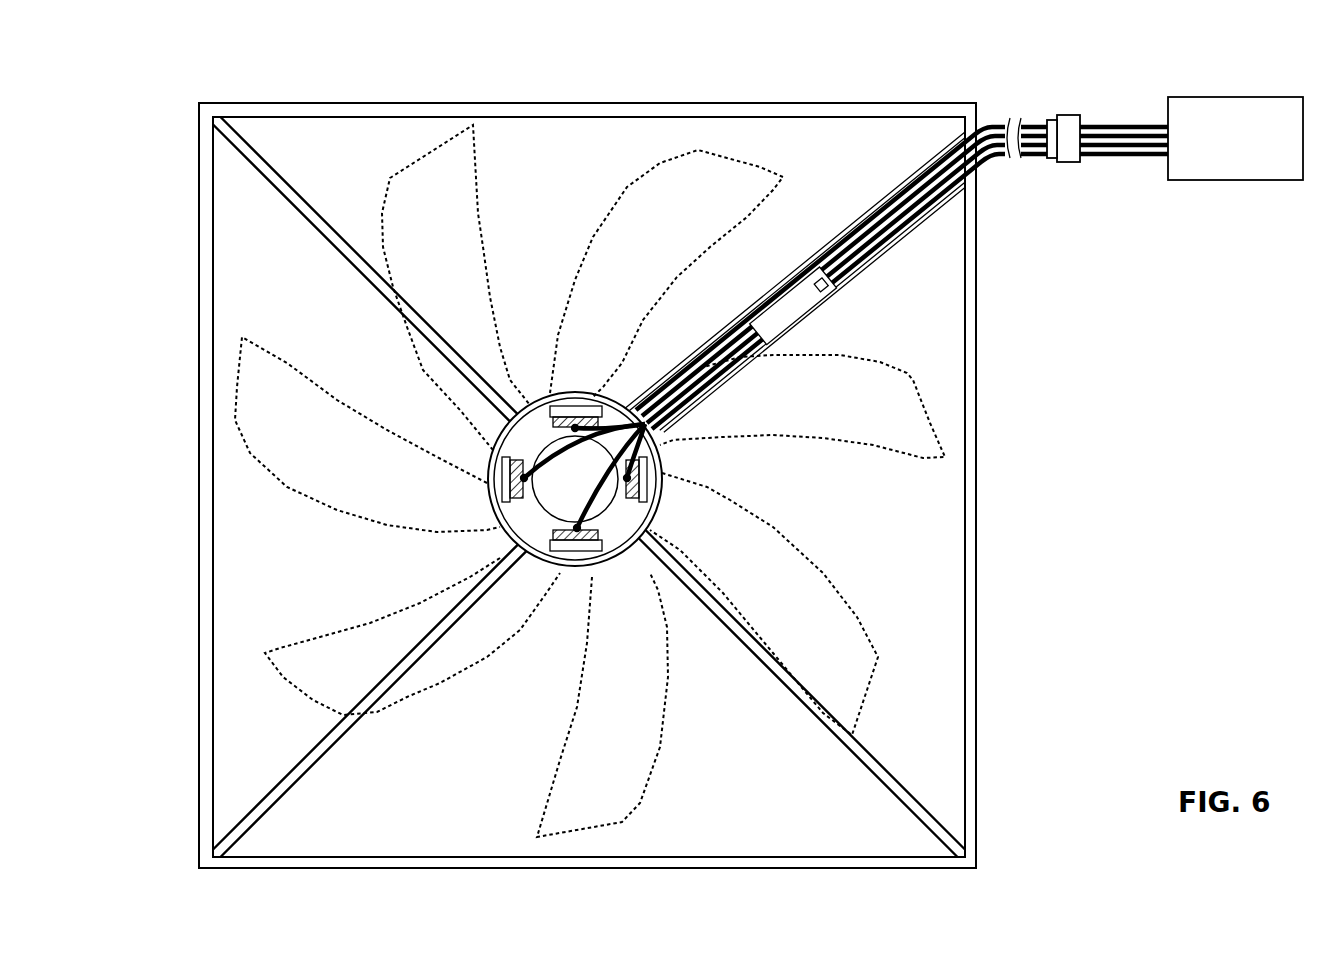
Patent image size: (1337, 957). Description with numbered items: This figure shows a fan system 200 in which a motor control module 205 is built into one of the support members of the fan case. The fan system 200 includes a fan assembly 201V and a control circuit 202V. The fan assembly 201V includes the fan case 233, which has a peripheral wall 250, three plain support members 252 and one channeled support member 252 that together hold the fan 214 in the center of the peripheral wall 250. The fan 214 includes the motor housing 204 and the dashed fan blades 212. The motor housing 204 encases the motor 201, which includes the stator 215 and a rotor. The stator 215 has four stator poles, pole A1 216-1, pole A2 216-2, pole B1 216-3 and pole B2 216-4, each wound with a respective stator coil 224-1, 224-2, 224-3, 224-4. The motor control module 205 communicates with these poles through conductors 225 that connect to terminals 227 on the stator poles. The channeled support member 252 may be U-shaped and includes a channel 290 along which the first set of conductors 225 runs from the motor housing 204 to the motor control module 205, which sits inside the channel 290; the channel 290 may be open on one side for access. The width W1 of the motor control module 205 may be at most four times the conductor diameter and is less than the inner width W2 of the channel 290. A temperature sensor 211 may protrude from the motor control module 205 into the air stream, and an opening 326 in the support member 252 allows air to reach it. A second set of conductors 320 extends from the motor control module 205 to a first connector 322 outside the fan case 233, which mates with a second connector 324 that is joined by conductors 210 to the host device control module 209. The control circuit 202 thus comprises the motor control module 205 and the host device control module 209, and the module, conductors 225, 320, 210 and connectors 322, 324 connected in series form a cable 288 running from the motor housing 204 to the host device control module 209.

The fan system 200 is at (316, 47).
The motor 201 is at (468, 457).
The fan assembly 201V is at (980, 315).
The control circuit 202 is at (622, 385).
The control circuit 202V is at (1168, 230).
The motor housing 204 is at (573, 568).
The motor control module 205 is at (796, 281).
The host device control module 209 is at (1236, 97).
The conductors 210 is at (1136, 124).
The temperature sensor 211 is at (829, 300).
The fan blades 212 is at (600, 237).
The fan 214 is at (783, 177).
The stator 215 is at (505, 542).
The pole A1 216-1 is at (552, 405).
The pole A2 216-2 is at (568, 560).
The pole B1 216-3 is at (500, 485).
The pole B2 216-4 is at (648, 460).
The stator coil 224-1 is at (512, 372).
The stator coil 224-2 is at (612, 560).
The stator coil 224-3 is at (514, 503).
The stator coil 224-4 is at (641, 526).
The conductors 225 is at (738, 378).
The terminals 227 is at (527, 479).
The fan case 233 is at (984, 517).
The peripheral wall 250 is at (963, 589).
The support member 252 is at (912, 226).
The cable 288 is at (995, 127).
The channel 290 is at (913, 175).
The conductors 320 is at (877, 284).
The first connector 322 is at (1048, 160).
The second connector 324 is at (1066, 115).
The opening 326 is at (742, 326).
The width of the motor control module W1 is at (776, 292).
The inner width of the channel W2 is at (855, 224).